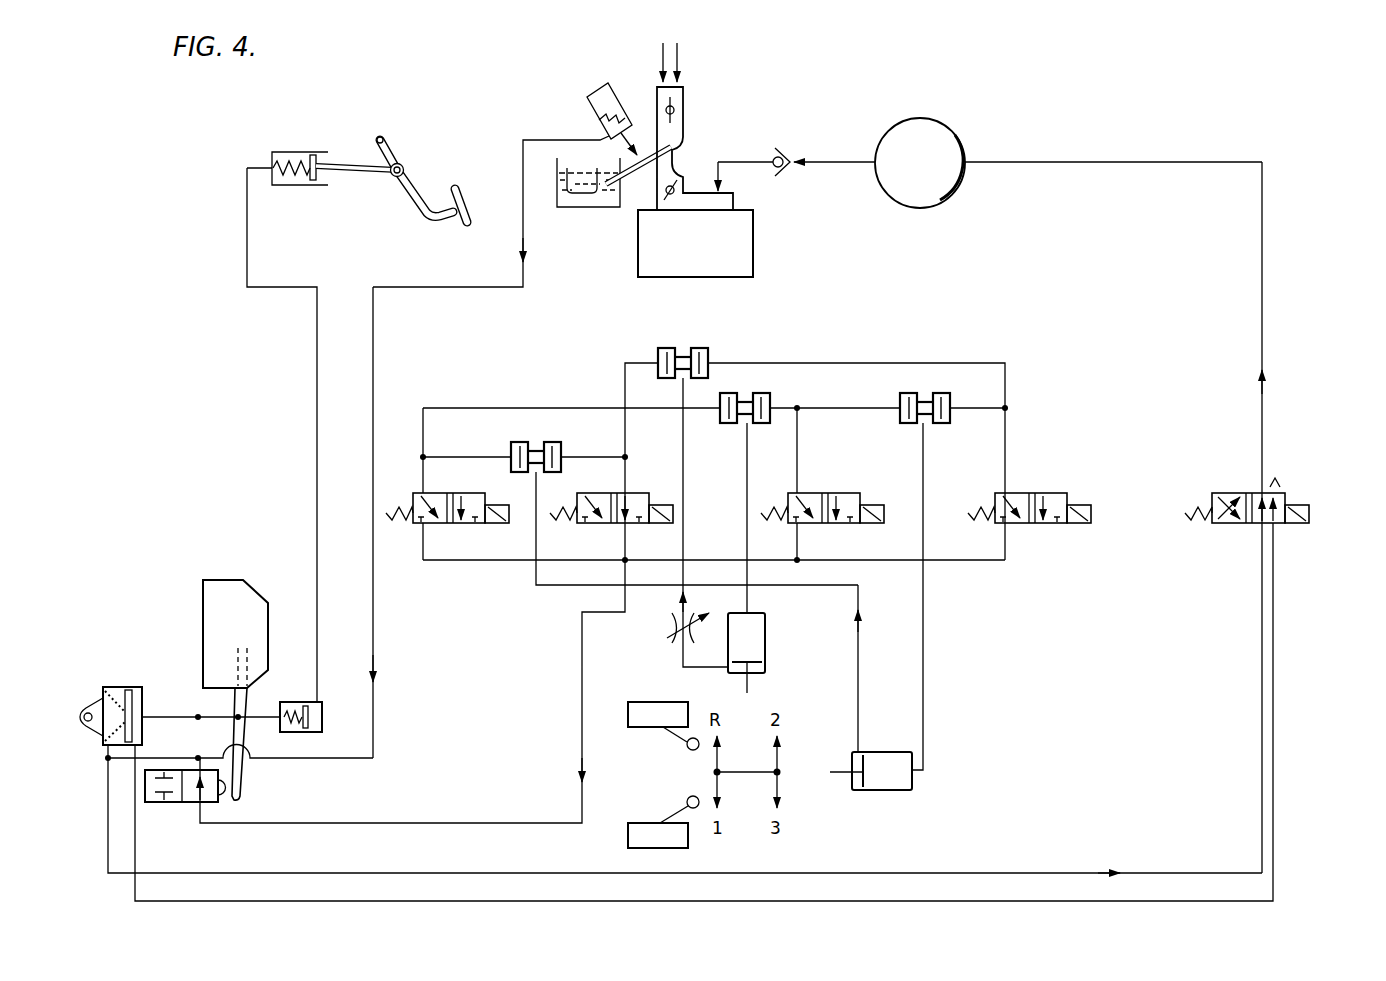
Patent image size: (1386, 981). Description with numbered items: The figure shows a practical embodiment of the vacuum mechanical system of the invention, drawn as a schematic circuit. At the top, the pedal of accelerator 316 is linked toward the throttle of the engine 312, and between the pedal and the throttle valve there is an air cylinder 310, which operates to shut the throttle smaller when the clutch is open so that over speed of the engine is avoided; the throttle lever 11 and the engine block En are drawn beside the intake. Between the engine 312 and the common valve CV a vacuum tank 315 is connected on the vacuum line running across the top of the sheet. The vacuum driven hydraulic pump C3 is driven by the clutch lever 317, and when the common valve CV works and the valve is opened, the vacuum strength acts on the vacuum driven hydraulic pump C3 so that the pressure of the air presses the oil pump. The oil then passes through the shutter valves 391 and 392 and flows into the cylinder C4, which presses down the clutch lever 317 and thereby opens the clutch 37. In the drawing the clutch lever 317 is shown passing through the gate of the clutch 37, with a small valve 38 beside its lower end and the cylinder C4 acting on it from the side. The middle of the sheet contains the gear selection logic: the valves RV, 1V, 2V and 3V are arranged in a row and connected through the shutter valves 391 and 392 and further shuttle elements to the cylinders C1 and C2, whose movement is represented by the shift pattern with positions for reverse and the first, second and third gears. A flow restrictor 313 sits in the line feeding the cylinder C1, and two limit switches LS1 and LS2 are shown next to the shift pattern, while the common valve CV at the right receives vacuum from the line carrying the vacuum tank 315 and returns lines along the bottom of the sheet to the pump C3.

The air cylinder 310 is at (586, 90).
The engine 312 is at (699, 188).
The pedal of accelerator 316 is at (415, 195).
The vacuum reservoir 315 is at (948, 135).
The throttle lever 11 is at (638, 183).
The engine En is at (695, 243).
The shutter valve 391 is at (698, 345).
The shutter valve 392 is at (508, 447).
The flow restrictor 313 is at (663, 645).
The clutch 37 is at (199, 620).
The clutch lever 317 is at (233, 738).
The shift lever valve 38 is at (170, 806).
The actuator cylinder C1 is at (767, 652).
The actuator cylinder C2 is at (863, 791).
The vacuum driven hydraulic pump C3 is at (132, 687).
The cylinder C4 is at (323, 727).
The reverse valve RV is at (451, 525).
The first gear valve 1V is at (634, 540).
The second gear valve 2V is at (842, 540).
The third gear valve 3V is at (1041, 525).
The common valve CV is at (1281, 525).
The limit switch 1 LS1 is at (663, 822).
The limit switch 2 LS2 is at (663, 726).